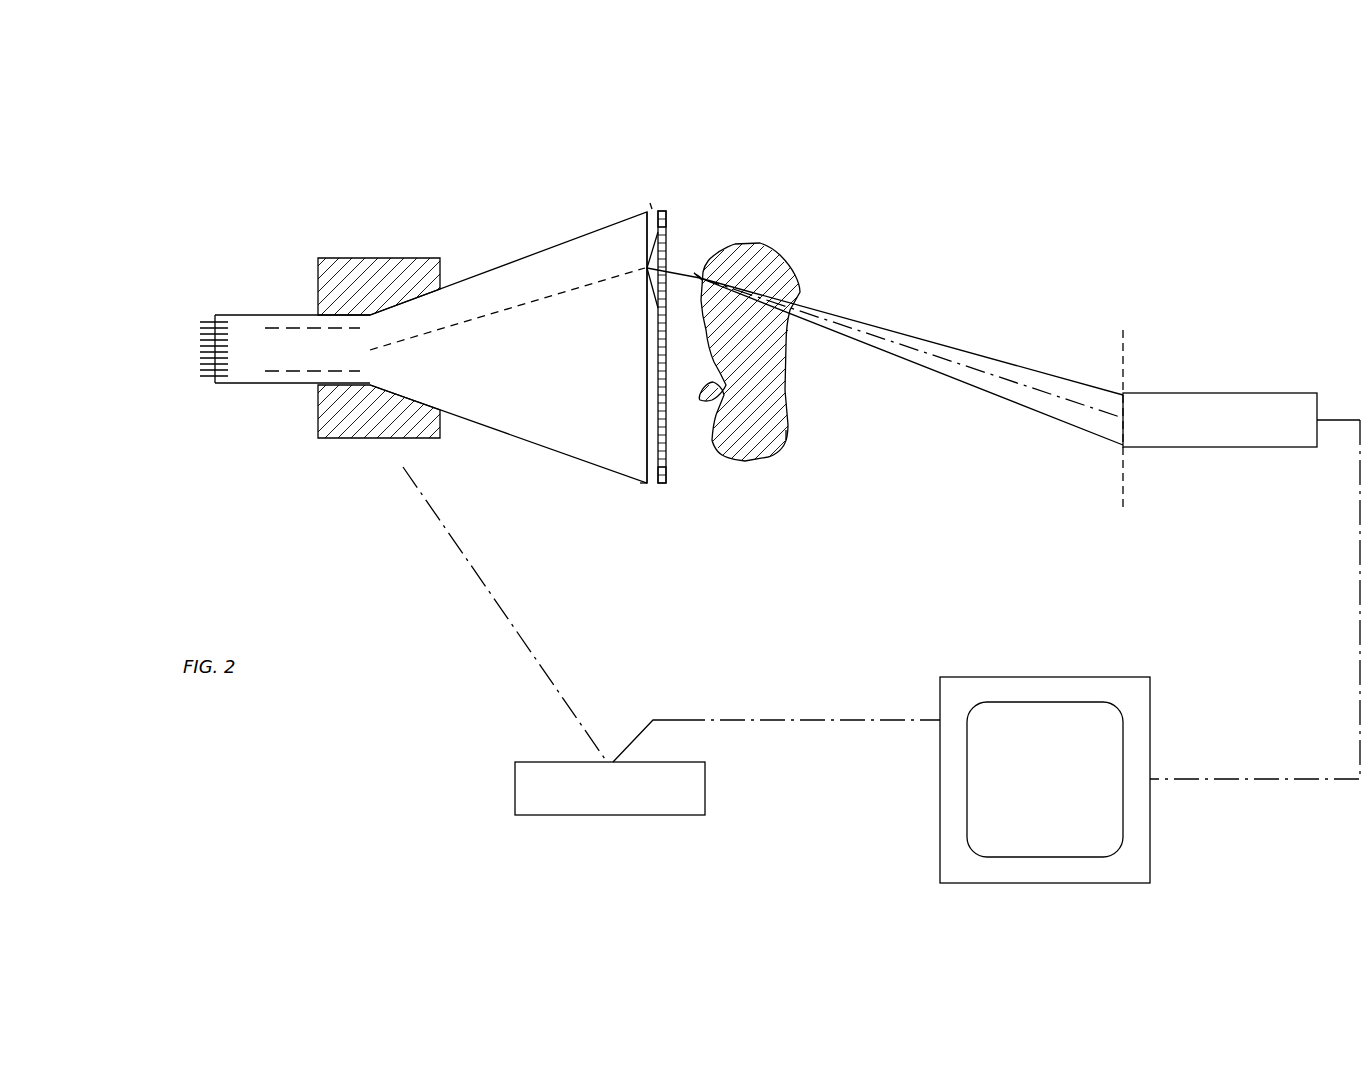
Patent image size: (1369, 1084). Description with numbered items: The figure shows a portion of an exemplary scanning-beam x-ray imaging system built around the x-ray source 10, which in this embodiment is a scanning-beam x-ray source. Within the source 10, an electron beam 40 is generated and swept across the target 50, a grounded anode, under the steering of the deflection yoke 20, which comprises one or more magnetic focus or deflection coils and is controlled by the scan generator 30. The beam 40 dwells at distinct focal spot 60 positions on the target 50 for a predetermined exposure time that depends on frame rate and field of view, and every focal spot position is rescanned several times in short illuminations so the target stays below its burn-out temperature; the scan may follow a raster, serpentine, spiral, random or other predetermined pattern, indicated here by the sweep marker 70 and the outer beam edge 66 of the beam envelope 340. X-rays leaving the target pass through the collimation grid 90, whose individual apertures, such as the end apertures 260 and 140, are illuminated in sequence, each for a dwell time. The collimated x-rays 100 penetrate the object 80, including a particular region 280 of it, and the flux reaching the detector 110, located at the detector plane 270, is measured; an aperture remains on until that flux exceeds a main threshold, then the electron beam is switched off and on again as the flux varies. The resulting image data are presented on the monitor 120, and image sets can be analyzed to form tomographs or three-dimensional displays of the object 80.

The x-ray source 10 is at (268, 276).
The deflection yoke 20 is at (361, 258).
The scan generator 30 is at (545, 762).
The electron beam 40 is at (483, 315).
The target 50 is at (645, 352).
The focal spot 60 is at (645, 268).
The beam edge 66 is at (643, 481).
The beam scanning direction 70 is at (652, 209).
The object 80 is at (770, 243).
The collimation grid 90 is at (663, 485).
The scattered beam 100 is at (928, 352).
The detector 110 is at (1225, 393).
The monitor 120 is at (1040, 677).
The aperture 140 is at (668, 480).
The top aperture cell 260 is at (668, 225).
The detector plane 270 is at (1123, 348).
The sample region 280 is at (786, 435).
The beam cone 340 is at (566, 423).